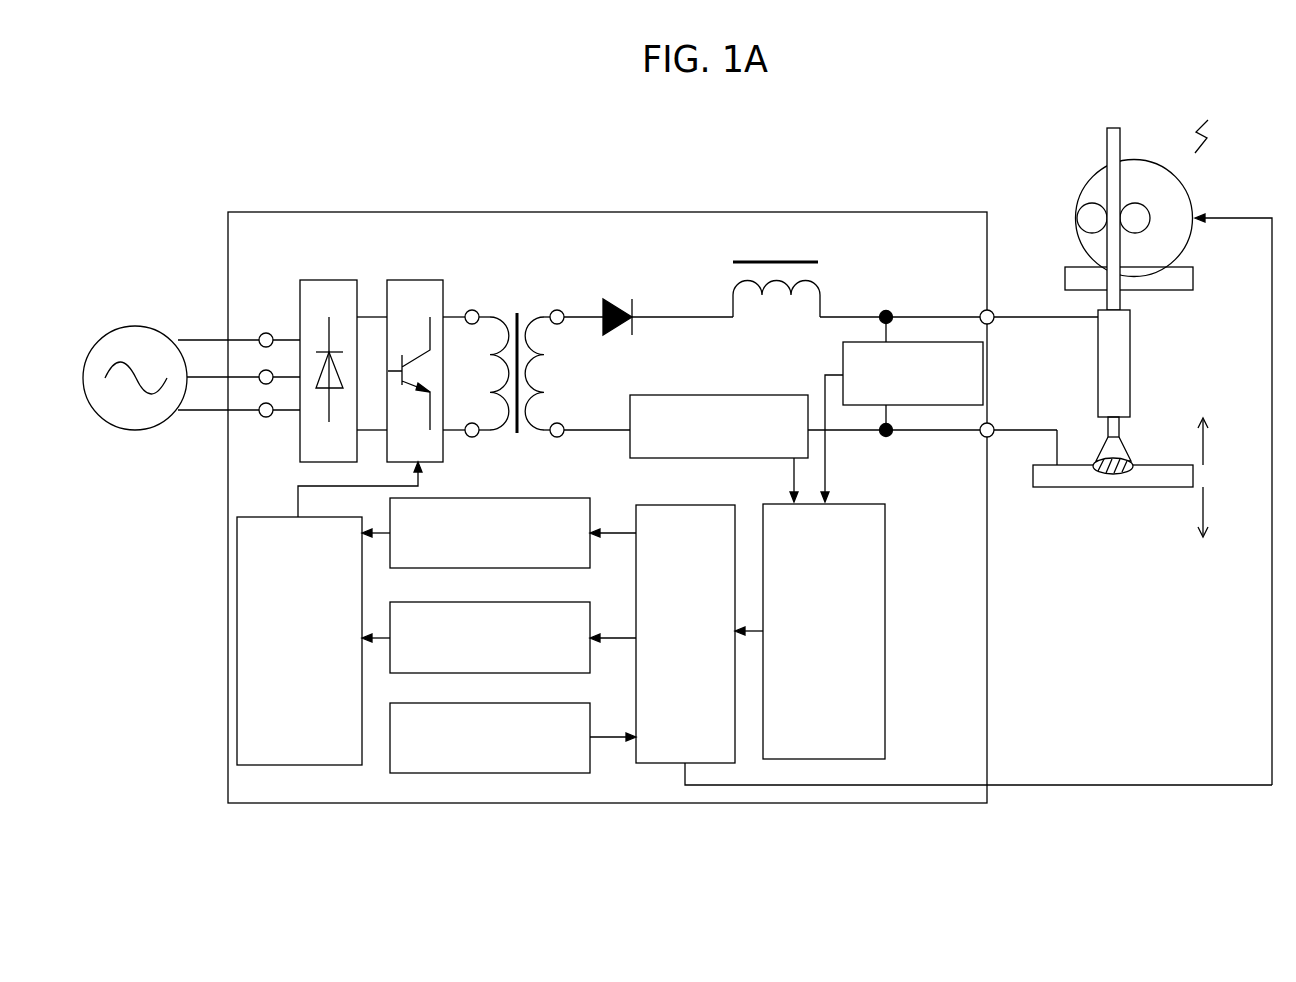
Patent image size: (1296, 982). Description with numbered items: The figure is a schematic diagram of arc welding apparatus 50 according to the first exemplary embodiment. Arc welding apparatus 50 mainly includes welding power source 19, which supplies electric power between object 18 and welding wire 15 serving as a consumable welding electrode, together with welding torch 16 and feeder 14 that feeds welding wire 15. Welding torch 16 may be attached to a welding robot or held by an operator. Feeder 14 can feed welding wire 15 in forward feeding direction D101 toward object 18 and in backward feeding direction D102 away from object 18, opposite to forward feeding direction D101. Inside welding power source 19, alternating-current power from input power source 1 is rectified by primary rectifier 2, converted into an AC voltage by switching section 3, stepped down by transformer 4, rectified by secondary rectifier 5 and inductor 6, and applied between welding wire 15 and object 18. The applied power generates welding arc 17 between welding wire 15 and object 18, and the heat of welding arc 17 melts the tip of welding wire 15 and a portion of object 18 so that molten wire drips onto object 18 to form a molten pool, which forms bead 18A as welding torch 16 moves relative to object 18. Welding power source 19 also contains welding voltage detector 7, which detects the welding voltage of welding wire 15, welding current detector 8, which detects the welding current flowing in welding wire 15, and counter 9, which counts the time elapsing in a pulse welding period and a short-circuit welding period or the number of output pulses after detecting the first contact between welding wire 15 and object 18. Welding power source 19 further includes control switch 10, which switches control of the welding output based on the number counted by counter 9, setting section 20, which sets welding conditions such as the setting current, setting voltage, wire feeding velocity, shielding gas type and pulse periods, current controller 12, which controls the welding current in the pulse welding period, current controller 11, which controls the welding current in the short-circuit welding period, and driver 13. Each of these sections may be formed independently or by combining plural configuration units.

The input power source 1 is at (128, 320).
The primary rectifier 2 is at (317, 278).
The switching section 3 is at (412, 278).
The transformer 4 is at (518, 302).
The secondary rectifier 5 is at (615, 290).
The inductor (DCL) 6 is at (777, 253).
The welding voltage detector 7 is at (985, 377).
The welding current detector 8 is at (792, 393).
The counter 9 is at (893, 528).
The control switch 10 is at (697, 502).
The current controller 11 is at (510, 495).
The current controller 12 is at (508, 600).
The driver 13 is at (248, 513).
The feeder 14 is at (1172, 203).
The welding wire 15 is at (1115, 153).
The welding torch 16 is at (1132, 393).
The welding arc 17 is at (1117, 448).
The object 18 is at (1148, 487).
The bead 18A is at (1108, 472).
The welding power source 19 is at (522, 212).
The setting section 20 is at (508, 702).
The arc welding apparatus 50 is at (1208, 123).
The forward feeding direction D101 is at (1205, 508).
The backward feeding direction D102 is at (1205, 430).